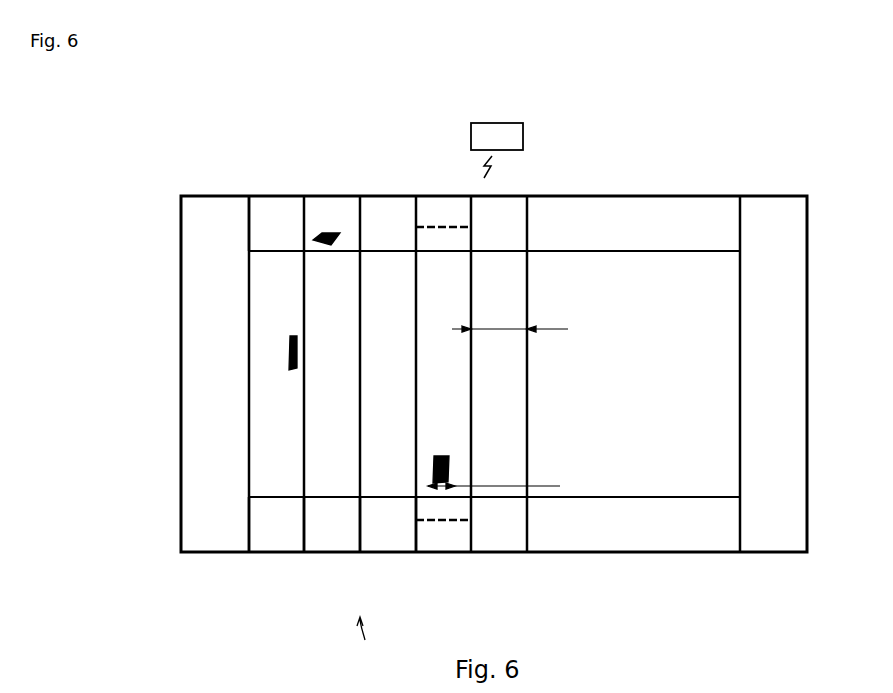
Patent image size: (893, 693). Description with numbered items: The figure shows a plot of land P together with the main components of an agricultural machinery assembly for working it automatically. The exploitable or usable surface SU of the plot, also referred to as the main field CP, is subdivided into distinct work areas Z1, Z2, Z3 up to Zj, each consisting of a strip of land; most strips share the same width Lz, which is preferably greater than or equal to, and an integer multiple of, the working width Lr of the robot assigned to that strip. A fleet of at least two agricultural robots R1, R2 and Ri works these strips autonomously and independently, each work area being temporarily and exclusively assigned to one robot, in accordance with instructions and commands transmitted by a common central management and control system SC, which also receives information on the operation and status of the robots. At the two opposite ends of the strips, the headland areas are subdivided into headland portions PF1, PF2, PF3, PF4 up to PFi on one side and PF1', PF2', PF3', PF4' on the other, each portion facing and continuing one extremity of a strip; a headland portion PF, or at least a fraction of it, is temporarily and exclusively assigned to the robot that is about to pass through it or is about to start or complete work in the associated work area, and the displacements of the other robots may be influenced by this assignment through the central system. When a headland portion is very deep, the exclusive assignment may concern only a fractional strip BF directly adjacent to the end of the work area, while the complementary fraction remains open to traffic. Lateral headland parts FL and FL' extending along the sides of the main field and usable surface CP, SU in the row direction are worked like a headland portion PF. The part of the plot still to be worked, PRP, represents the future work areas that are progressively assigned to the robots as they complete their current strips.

The carrier plate / substrate CP, SU is at (640, 497).
The remaining part of the plot of land still to be worked PRP is at (640, 300).
The lateral headland part FL is at (185, 374).
The lateral headland part FL' is at (800, 374).
The headland portion PF1 is at (260, 195).
The headland portion PF2 is at (324, 335).
The headland portion PF3 is at (373, 335).
The headland portion PF4 is at (436, 340).
The headland portion PF is at (490, 222).
The headland portion PFi is at (496, 540).
The headland portion PF1' is at (265, 555).
The headland portion PF2' is at (325, 555).
The headland portion PF3' is at (383, 555).
The headland portion PF4' is at (434, 561).
The fractional strip of headland portion BF is at (436, 230).
The agricultural robot R1 is at (290, 352).
The agricultural robot R2 is at (330, 234).
The agricultural robot Ri is at (440, 458).
The work area Z1 is at (270, 274).
The work area Z2 is at (320, 313).
The work area Z3 is at (375, 392).
The work area Zj is at (512, 388).
The width of work area Lz is at (510, 321).
The working width of agricultural robot Lr is at (494, 478).
The central management and control system SC is at (518, 134).
The plot of land P is at (360, 640).